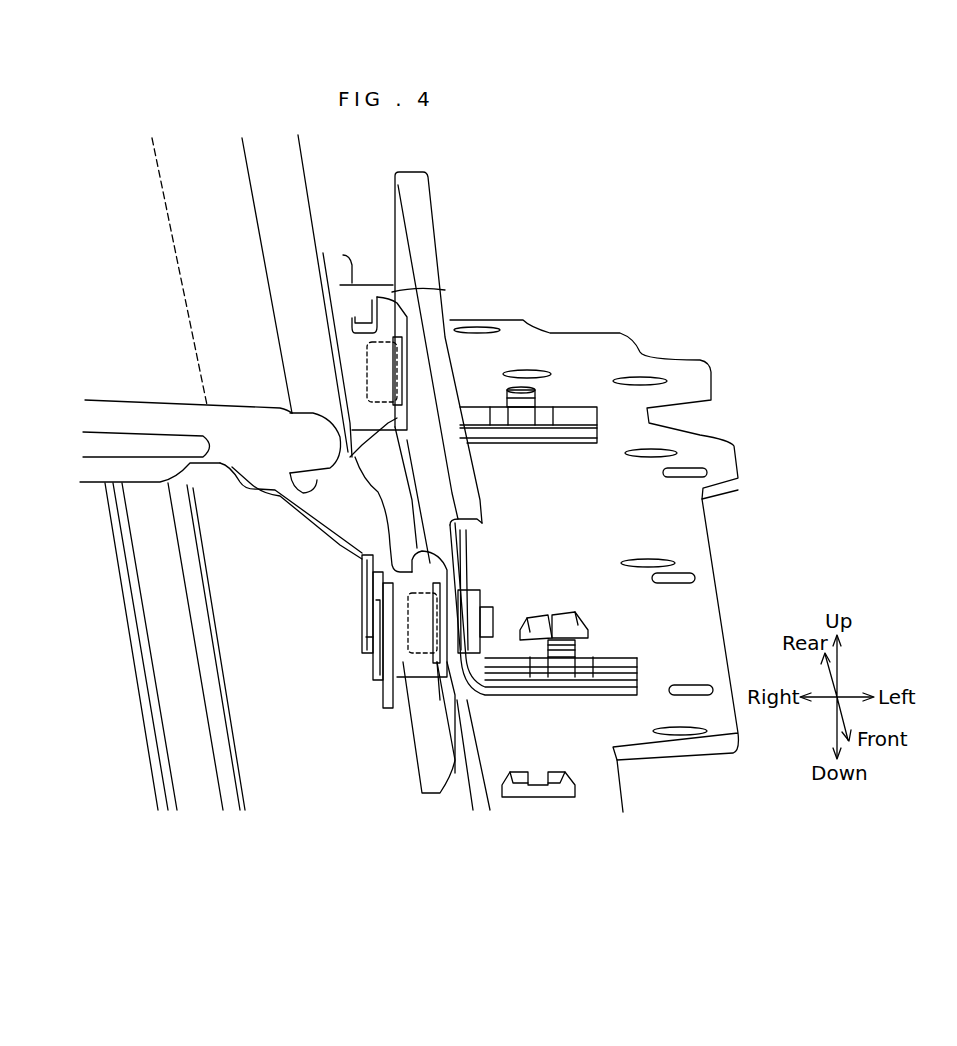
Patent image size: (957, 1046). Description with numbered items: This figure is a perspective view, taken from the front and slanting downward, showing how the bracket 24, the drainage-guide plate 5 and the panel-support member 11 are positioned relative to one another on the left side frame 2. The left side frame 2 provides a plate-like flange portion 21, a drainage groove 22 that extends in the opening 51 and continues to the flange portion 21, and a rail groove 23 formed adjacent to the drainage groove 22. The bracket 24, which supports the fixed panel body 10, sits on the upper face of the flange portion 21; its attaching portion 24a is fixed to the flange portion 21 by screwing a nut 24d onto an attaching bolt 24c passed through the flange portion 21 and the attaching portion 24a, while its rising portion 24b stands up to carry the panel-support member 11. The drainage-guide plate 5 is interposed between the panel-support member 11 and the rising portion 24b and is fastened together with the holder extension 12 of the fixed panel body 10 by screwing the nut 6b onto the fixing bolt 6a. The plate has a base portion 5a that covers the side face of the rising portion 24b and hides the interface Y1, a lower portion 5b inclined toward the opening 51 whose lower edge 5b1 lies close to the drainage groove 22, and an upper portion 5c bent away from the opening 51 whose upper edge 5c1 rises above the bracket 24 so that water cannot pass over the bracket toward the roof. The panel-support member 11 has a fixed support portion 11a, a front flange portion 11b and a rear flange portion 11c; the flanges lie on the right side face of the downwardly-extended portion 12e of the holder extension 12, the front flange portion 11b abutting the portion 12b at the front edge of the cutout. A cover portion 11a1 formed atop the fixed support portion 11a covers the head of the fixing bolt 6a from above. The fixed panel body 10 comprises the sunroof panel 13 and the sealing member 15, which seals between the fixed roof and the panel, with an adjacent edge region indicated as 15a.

The left side frame 2 is at (744, 397).
The drainage-guide plate 5 is at (411, 162).
The base portion 5a is at (443, 692).
The lower portion 5b is at (420, 767).
The lower edge 5b1 is at (407, 738).
The upper portion 5c is at (423, 210).
The upper edge 5c1 is at (440, 243).
The fixing bolt 6a is at (385, 370).
The nut 6b is at (480, 597).
The fixed panel body 10 is at (124, 240).
The panel-support member 11 is at (382, 296).
The fixed support portion 11a is at (440, 337).
The cover portion 11a1 is at (440, 327).
The front flange portion 11b is at (377, 623).
The rear flange portion 11c is at (364, 586).
The holder extension 12 is at (328, 257).
The portion on the front-edge side of the cutout portion 12b is at (366, 637).
The downwardly-extended portion 12e is at (360, 554).
The sunroof panel 13 is at (132, 373).
The sealing member 15 is at (288, 186).
The side panel edge 15a is at (306, 171).
The flange portion 21 is at (690, 530).
The drainage groove 22 is at (330, 748).
The rail groove 23 is at (185, 728).
The bracket 24 is at (574, 403).
The attaching portion 24a is at (557, 443).
The rising portion 24b is at (472, 556).
The attaching bolt 24c is at (577, 637).
The nut 24d is at (573, 673).
The opening 51 is at (357, 183).
The interface Y1 is at (495, 700).